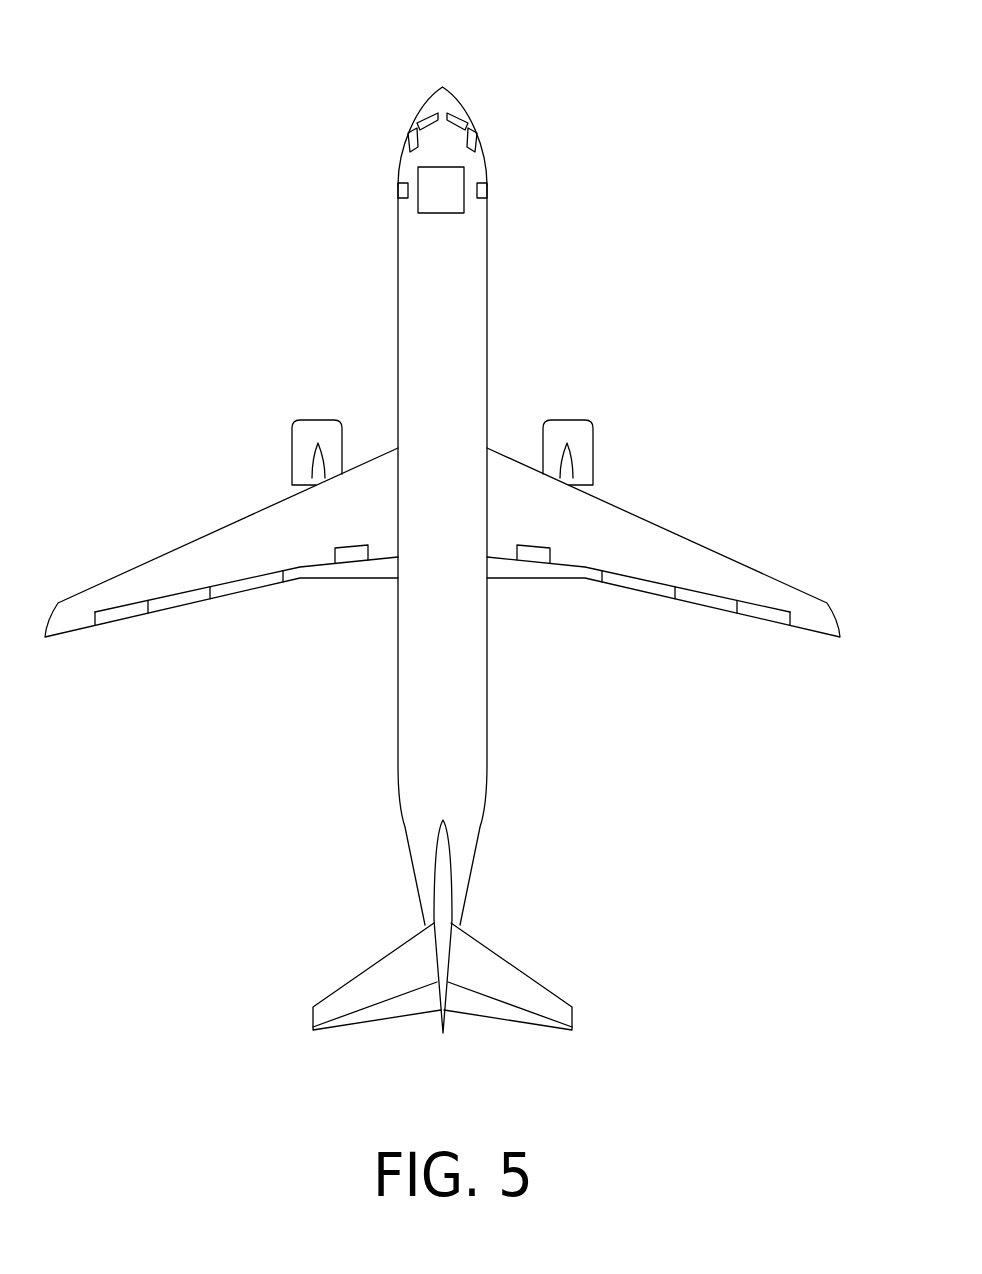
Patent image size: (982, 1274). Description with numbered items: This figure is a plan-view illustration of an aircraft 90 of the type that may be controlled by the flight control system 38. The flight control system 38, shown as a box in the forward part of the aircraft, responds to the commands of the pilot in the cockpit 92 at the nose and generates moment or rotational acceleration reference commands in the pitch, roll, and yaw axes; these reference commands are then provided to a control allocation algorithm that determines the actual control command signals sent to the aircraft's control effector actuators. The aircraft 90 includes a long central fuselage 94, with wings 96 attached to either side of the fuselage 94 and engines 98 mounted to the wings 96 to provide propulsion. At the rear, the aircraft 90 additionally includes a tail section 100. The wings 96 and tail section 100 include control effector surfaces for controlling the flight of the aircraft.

The aircraft 90 is at (662, 125).
The cockpit 92 is at (417, 113).
The fuselage 94 is at (487, 293).
The wings 96 is at (97, 583).
The engines 98 is at (317, 418).
The tail section 100 is at (497, 1020).
The flight control system 38 is at (442, 213).